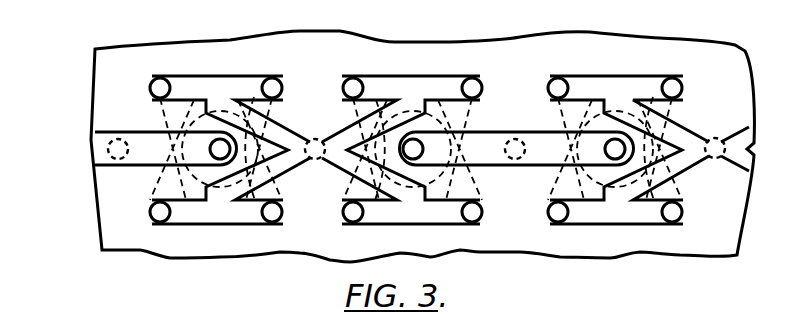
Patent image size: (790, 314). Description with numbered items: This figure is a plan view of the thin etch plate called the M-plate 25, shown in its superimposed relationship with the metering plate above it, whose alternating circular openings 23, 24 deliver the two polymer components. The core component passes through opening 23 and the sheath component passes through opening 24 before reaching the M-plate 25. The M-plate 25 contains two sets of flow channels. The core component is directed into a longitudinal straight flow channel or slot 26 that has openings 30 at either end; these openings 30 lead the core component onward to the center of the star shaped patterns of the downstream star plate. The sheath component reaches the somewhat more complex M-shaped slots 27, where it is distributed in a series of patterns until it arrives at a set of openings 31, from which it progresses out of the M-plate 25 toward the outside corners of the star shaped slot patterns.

The circular opening 23 is at (108, 159).
The circular opening 24 is at (304, 170).
The M-plate 25 is at (70, 75).
The longitudinal straight flow channel 26 is at (147, 149).
The M-shaped slot 27 is at (222, 90).
The opening 30 is at (346, 108).
The opening 31 is at (345, 80).